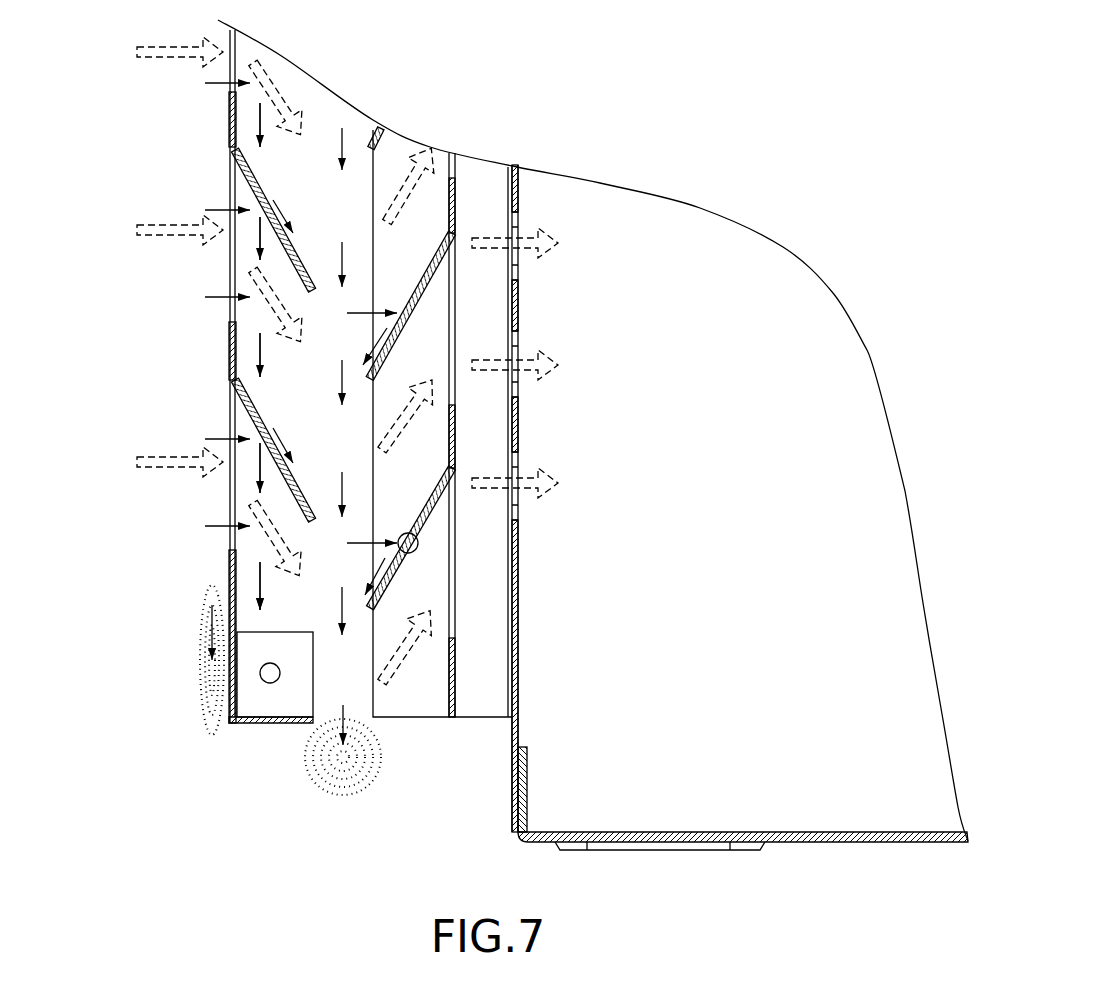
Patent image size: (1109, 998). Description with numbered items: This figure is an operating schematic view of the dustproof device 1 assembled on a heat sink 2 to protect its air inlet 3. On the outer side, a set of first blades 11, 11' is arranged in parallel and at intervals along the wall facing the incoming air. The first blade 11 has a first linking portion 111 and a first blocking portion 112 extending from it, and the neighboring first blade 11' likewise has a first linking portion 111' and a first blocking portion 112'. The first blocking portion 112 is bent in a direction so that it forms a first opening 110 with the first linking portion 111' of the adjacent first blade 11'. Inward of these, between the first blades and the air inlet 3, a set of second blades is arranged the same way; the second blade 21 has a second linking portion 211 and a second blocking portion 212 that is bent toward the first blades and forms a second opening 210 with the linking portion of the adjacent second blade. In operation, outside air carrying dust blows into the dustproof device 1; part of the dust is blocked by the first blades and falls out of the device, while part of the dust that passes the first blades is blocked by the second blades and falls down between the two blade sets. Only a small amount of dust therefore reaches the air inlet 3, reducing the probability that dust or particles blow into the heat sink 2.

The dustproof device 1 is at (180, 507).
The first blade 11 is at (189, 188).
The first linking portion 111 is at (174, 116).
The first blocking portion 112 is at (214, 215).
The first blade 11' is at (189, 417).
The first linking portion 111' is at (174, 346).
The first blocking portion 112' is at (214, 445).
The first opening 110 is at (247, 265).
The heat sink 2 is at (510, 770).
The second blade 21 is at (514, 435).
The second linking portion 211 is at (455, 200).
The second blocking portion 212 is at (433, 287).
The second opening 210 is at (435, 322).
The air inlet 3 is at (518, 375).